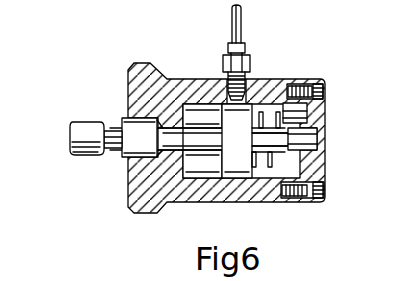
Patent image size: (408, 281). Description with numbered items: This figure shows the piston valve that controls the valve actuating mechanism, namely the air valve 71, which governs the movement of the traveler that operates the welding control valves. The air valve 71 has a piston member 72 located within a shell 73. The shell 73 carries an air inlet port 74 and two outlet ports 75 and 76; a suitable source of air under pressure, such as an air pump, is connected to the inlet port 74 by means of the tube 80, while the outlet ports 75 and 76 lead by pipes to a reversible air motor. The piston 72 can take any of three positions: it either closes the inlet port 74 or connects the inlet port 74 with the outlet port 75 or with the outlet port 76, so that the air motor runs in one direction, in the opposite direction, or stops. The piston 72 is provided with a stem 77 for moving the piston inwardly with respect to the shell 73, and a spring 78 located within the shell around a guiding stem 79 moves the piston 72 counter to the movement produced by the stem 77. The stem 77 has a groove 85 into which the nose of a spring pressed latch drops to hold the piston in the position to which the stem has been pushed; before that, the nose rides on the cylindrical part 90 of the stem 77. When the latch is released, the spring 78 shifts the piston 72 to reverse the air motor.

The air valve 71 is at (282, 86).
The piston member 72 is at (233, 153).
The shell 73 is at (207, 95).
The air inlet port 74 is at (248, 77).
The outlet port 75 is at (195, 107).
The outlet port 76 is at (270, 165).
The stem 77 is at (88, 132).
The spring 78 is at (310, 112).
The guiding stem 79 is at (318, 148).
The tube 80 is at (242, 23).
The groove 85 is at (110, 133).
The cylindrical part 90 is at (138, 140).